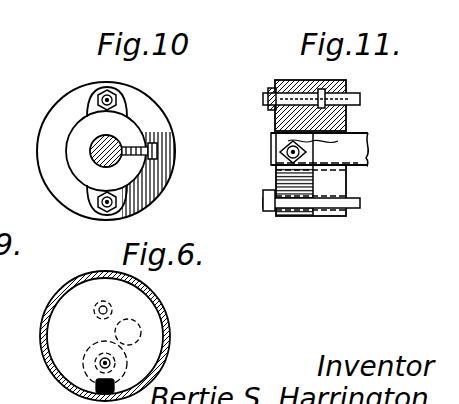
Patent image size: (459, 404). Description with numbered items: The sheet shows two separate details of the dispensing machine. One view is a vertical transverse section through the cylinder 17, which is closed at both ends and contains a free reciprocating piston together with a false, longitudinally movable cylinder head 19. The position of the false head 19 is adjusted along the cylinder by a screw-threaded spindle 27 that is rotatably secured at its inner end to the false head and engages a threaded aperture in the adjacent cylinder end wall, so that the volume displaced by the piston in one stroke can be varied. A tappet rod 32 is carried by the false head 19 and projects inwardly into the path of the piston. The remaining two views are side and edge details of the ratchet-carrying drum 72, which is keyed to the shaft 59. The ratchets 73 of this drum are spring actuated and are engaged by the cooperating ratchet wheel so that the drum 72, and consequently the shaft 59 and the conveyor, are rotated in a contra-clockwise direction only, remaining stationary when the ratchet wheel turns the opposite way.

In FIG. 10, the ratchet-carrying drum 72 is at (125, 127).
In FIG. 11, the ratchet-carrying drum 72 is at (300, 208).
In FIG. 10, the shaft 59 is at (113, 163).
In FIG. 11, the shaft 59 is at (358, 147).
In FIG. 11, the ratchets 73 is at (353, 103).
In FIG. 6, the cylinder 17 is at (157, 306).
In FIG. 6, the false cylinder head 19 is at (152, 335).
In FIG. 6, the tappet rod 32 is at (100, 306).
In FIG. 6, the screw-threaded spindle 27 is at (110, 362).